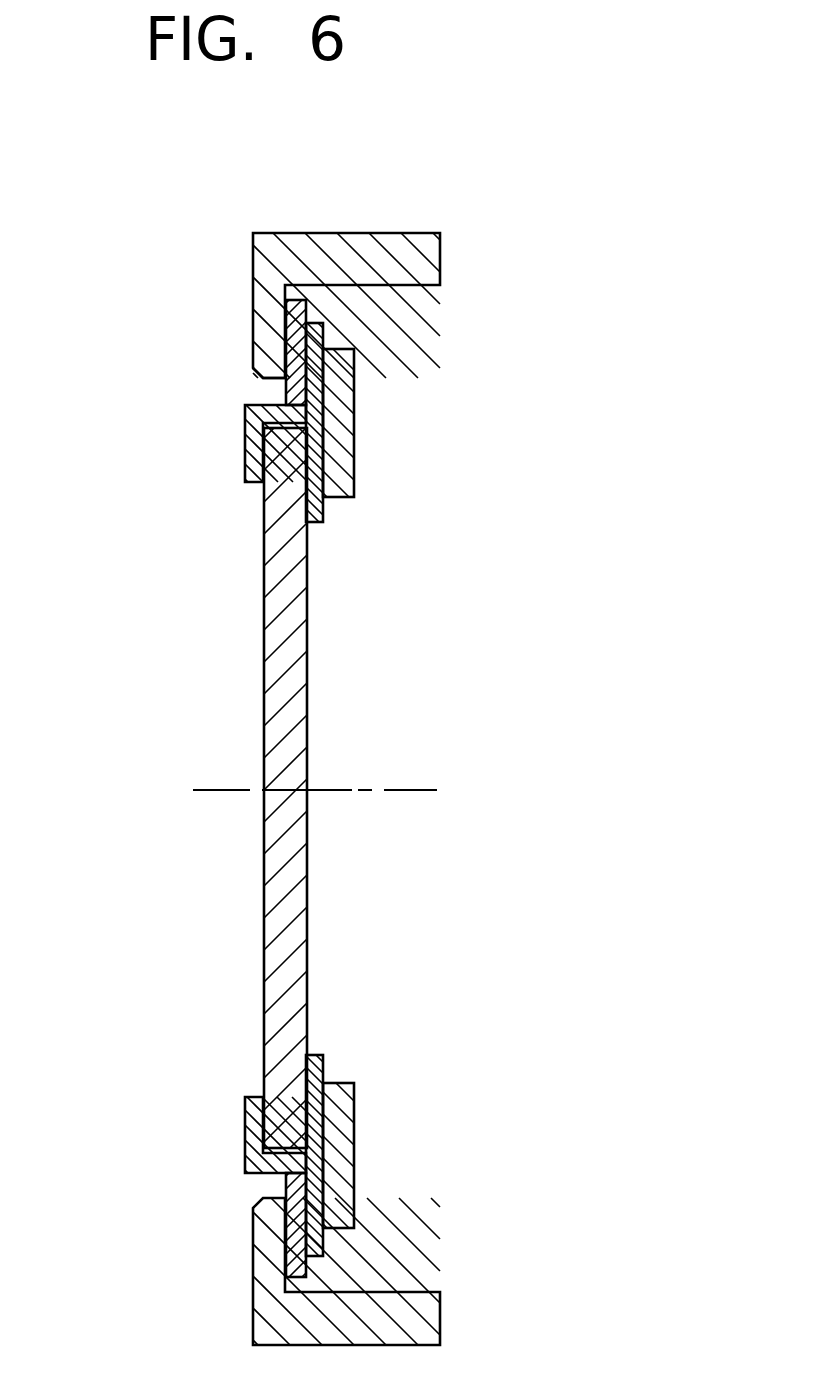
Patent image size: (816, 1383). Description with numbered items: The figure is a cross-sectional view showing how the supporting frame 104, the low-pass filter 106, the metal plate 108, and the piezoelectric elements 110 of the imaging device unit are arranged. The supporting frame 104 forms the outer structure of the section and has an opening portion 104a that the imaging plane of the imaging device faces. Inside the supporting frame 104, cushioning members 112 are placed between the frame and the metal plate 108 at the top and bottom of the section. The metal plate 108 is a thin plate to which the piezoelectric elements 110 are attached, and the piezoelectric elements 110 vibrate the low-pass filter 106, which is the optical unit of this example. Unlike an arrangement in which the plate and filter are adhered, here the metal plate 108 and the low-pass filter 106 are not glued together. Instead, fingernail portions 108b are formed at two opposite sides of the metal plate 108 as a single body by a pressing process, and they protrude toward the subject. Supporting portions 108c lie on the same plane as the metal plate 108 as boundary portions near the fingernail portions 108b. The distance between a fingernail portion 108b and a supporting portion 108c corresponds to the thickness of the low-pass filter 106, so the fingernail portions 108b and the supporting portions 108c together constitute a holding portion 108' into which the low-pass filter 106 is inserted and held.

The supporting frame 104 is at (414, 244).
The opening portion 104a is at (280, 382).
The cushioning member 112 is at (290, 338).
The metal plate 108 is at (372, 416).
The holding portion 108' is at (184, 830).
The fingernail portion 108b is at (244, 442).
The supporting portion 108c is at (312, 508).
The piezoelectric element 110 is at (344, 418).
The low-pass filter 106 is at (282, 647).